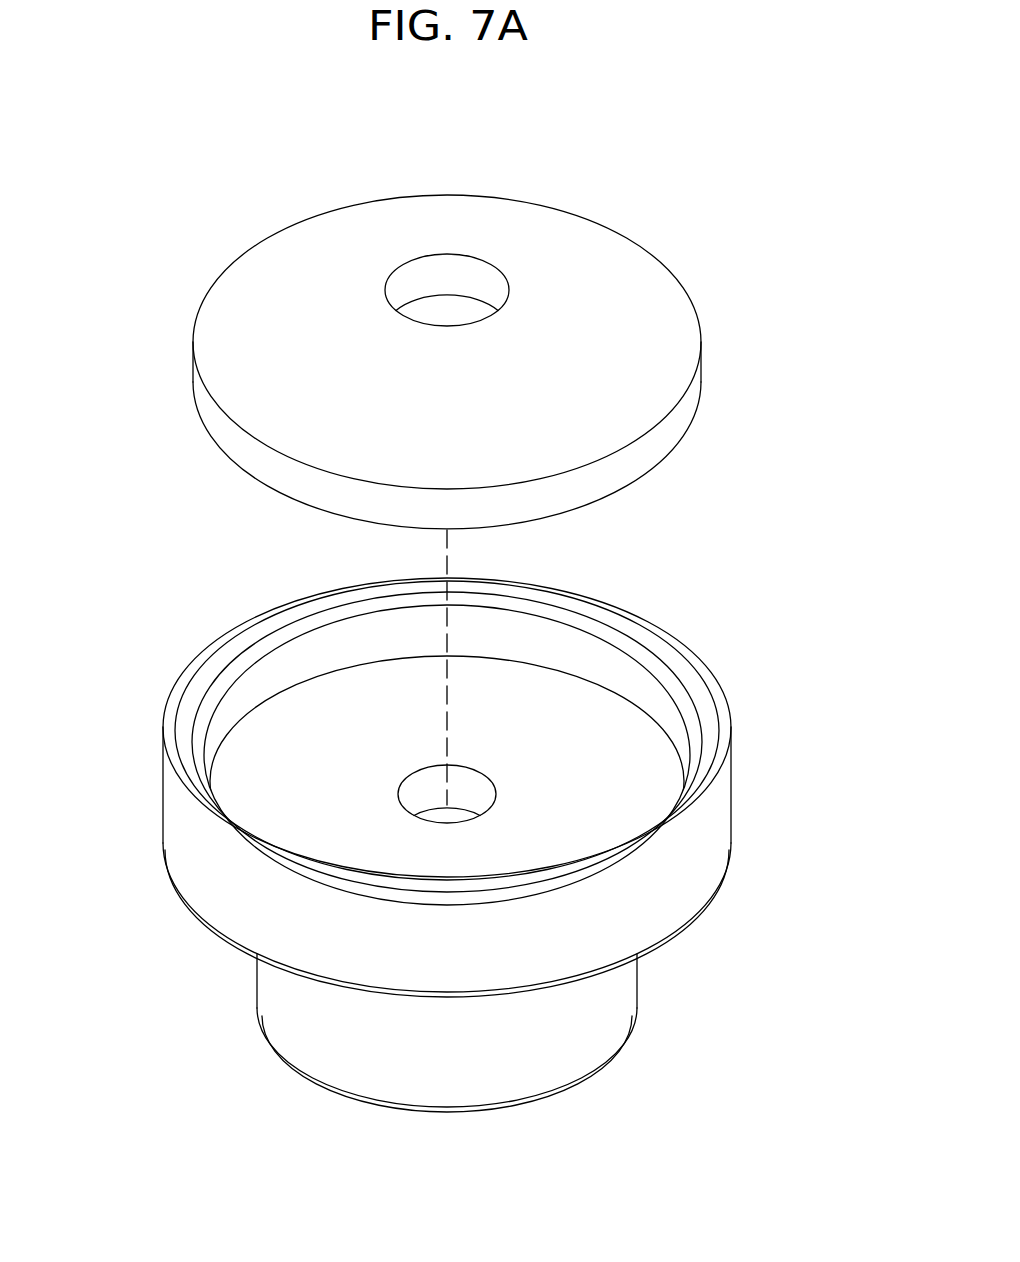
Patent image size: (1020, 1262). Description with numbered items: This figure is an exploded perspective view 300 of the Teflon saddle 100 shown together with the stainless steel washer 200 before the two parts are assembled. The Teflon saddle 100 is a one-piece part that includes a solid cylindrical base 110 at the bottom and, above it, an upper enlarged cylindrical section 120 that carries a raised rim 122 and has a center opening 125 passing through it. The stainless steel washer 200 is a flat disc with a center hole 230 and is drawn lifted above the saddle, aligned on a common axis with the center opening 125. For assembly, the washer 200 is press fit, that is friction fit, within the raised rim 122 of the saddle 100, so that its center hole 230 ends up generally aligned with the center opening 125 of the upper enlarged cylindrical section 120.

The exploded perspective view 300 is at (193, 187).
The stainless steel washer 200 is at (703, 285).
The center hole 230 is at (457, 255).
The Teflon saddle 100 is at (193, 641).
The upper enlarged cylindrical section 120 is at (742, 830).
The raised rim 122 is at (707, 725).
The center opening 125 is at (472, 772).
The solid cylindrical base 110 is at (668, 993).